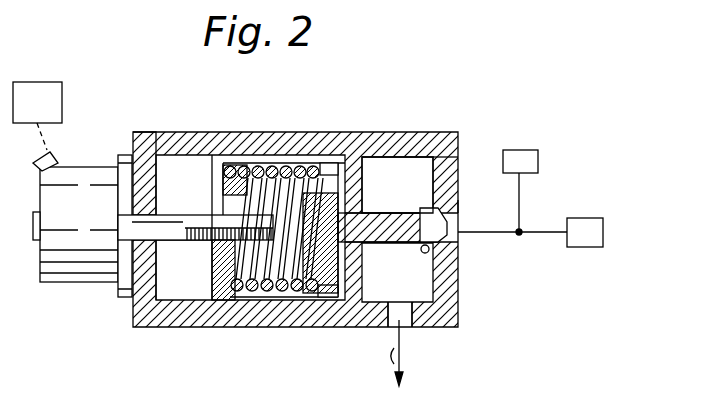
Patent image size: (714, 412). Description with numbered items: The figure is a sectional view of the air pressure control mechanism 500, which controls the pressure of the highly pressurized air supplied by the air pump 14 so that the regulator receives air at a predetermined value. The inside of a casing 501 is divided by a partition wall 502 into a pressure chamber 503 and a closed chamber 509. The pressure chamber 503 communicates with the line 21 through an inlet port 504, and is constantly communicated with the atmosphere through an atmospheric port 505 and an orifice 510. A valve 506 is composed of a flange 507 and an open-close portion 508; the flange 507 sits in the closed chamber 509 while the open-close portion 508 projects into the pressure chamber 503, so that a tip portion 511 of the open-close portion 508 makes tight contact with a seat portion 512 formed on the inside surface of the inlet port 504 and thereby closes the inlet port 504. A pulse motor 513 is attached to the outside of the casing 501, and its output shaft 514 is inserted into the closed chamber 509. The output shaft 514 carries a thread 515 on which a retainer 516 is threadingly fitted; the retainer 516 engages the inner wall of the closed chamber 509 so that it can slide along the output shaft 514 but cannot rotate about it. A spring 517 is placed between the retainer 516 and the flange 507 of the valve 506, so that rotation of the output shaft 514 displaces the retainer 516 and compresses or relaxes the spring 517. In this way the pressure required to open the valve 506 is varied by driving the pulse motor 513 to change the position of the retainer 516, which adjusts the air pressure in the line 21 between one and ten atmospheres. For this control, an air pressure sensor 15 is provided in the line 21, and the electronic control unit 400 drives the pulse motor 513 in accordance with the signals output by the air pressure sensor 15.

The electronic control unit 400 is at (53, 82).
The air pump 14 is at (592, 225).
The air pressure sensor 15 is at (538, 155).
The line 21 is at (497, 232).
The air pressure control mechanism 500 is at (167, 329).
The casing 501 is at (348, 147).
The partition wall 502 is at (325, 297).
The pressure chamber 503 is at (427, 170).
The inlet port 504 is at (452, 227).
The atmospheric port 505 is at (390, 335).
The valve 506 is at (377, 210).
The flange 507 is at (313, 157).
The open-close portion 508 is at (402, 218).
The closed chamber 509 is at (193, 293).
The orifice 510 is at (406, 358).
The tip portion 511 is at (458, 212).
The seat portion 512 is at (426, 253).
The pulse motor 513 is at (68, 273).
The output shaft 514 is at (173, 209).
The thread 515 is at (200, 225).
The retainer 516 is at (220, 165).
The spring 517 is at (275, 163).